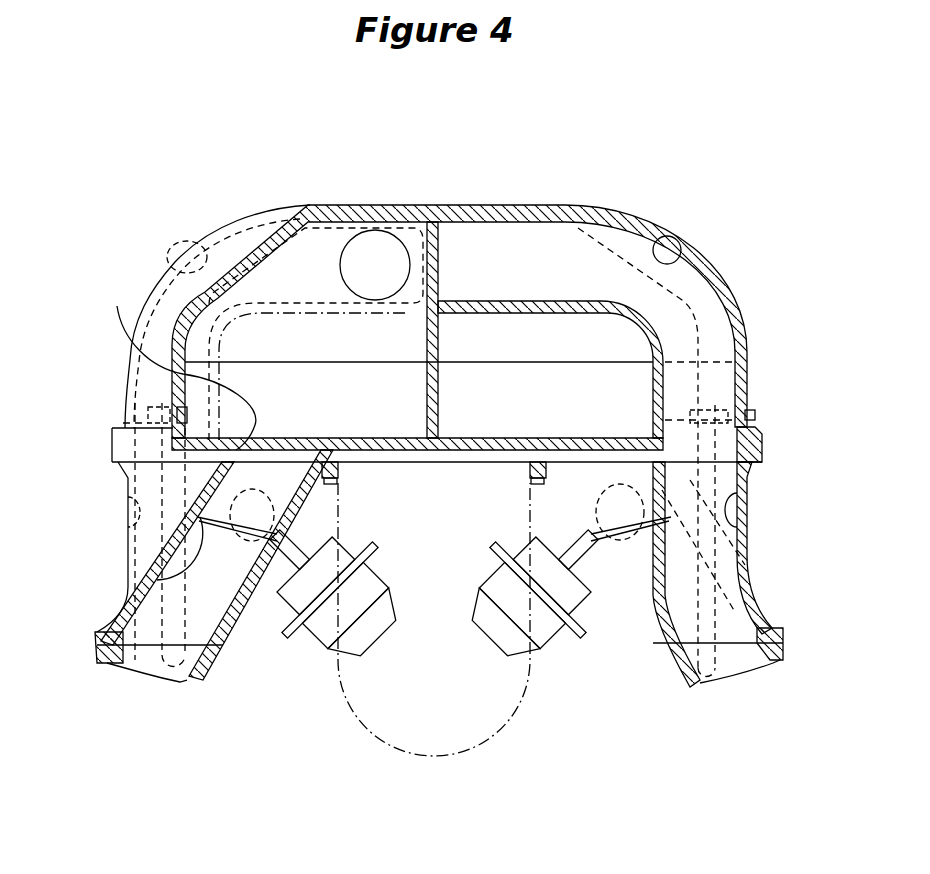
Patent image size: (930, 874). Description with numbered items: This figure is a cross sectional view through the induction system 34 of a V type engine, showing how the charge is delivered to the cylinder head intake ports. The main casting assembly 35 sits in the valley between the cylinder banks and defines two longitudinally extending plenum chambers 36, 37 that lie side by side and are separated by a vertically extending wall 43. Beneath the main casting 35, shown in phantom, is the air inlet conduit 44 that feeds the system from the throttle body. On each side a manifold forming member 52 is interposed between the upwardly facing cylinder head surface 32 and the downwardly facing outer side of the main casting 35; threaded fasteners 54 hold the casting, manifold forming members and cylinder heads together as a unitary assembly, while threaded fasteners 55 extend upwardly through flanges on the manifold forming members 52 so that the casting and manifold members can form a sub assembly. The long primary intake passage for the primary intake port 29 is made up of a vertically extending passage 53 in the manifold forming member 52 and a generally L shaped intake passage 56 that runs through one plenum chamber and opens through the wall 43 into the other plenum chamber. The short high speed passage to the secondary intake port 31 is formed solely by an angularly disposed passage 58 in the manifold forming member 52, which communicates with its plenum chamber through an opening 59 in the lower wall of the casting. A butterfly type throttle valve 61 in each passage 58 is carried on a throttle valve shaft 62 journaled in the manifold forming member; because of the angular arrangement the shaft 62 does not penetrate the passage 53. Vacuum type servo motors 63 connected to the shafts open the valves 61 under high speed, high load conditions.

The primary intake port 29 is at (760, 665).
The secondary intake port 31 is at (135, 660).
The cylinder head surface 32 is at (97, 635).
The induction system 34 is at (437, 765).
The main casting assembly 35 is at (730, 290).
The plenum chamber 36 is at (337, 416).
The plenum chamber 37 is at (557, 416).
The vertically extending wall 43 is at (440, 355).
The air inlet conduit 44 is at (468, 748).
The manifold forming member 52 is at (127, 548).
The vertically extending passage 53 is at (122, 522).
The threaded fasteners 54 is at (165, 405).
The threaded fasteners 55 is at (343, 490).
The L shaped intake passage 56 is at (183, 268).
The angularly disposed passage 58 is at (225, 650).
The opening 59 is at (264, 339).
The butterfly type throttle valve 61 is at (157, 582).
The throttle valve shaft 62 is at (228, 545).
The vacuum type servo motor 63 is at (318, 643).